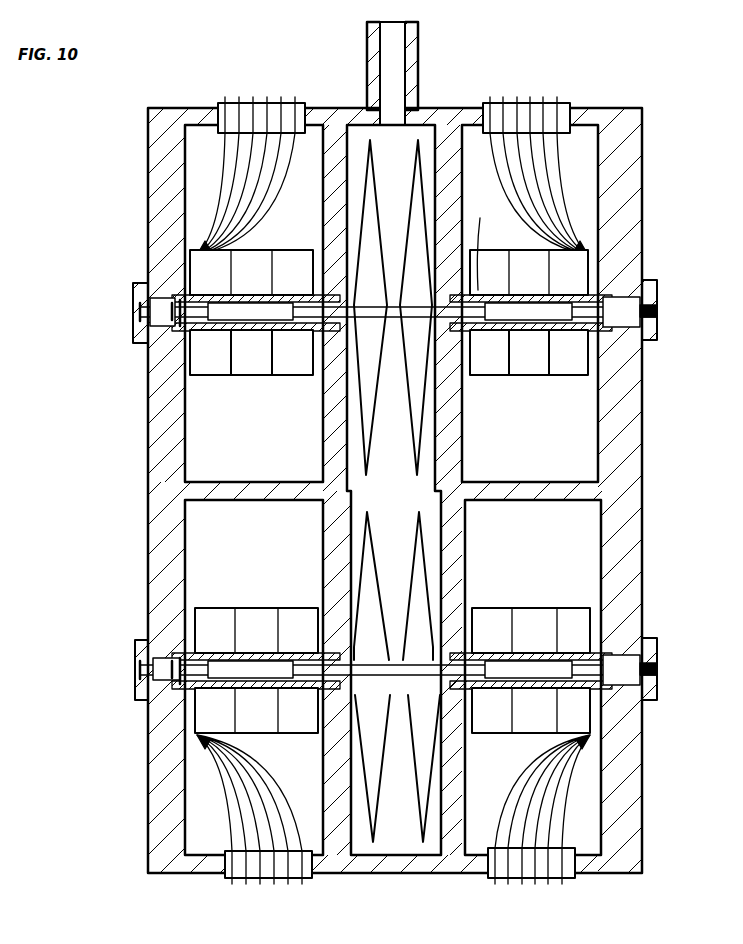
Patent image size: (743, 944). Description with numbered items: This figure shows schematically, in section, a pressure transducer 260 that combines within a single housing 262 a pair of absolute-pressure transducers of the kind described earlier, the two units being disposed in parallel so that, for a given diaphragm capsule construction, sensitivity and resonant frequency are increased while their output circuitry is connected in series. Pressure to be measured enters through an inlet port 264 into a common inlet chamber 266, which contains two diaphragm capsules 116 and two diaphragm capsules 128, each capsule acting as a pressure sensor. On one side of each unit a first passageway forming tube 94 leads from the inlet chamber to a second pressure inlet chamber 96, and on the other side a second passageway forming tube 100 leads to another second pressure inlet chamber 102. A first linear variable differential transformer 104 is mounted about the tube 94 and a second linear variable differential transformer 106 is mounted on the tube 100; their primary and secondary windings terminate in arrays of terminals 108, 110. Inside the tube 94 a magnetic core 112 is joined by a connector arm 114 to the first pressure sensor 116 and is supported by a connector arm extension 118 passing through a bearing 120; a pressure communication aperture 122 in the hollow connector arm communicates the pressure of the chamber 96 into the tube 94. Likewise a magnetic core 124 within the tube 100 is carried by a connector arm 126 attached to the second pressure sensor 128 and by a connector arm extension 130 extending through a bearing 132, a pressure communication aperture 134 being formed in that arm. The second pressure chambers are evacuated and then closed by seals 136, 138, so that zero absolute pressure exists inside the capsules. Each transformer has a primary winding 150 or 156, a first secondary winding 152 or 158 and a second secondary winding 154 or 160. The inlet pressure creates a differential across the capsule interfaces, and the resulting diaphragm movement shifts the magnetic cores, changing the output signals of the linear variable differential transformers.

The first passageway forming tube 94 is at (496, 280).
The second pressure inlet chamber 96 is at (648, 282).
The second passageway forming tube 100 is at (262, 275).
The second pressure inlet chamber 102 is at (150, 303).
The first linear variable differential transformer 104 is at (598, 255).
The second linear variable differential transformer 106 is at (183, 272).
The array of terminals 108 is at (522, 103).
The array of terminals 110 is at (292, 103).
The magnetic core 112 is at (598, 278).
The connector arm 114 is at (394, 490).
The first pressure sensor 116 is at (368, 140).
The connector arm extension 118 is at (650, 316).
The bearing 120 is at (650, 338).
The pressure communication aperture 122 is at (482, 244).
The magnetic core 124 is at (140, 340).
The connector arm 126 is at (372, 310).
The second pressure sensor 128 is at (438, 140).
The connector arm extension 130 is at (178, 330).
The bearing 132 is at (168, 326).
The pressure communication aperture 134 is at (284, 300).
The seal 136 is at (660, 310).
The seal 138 is at (150, 318).
The primary winding 150 is at (530, 373).
The first secondary winding 152 is at (568, 374).
The second secondary winding 154 is at (500, 372).
The primary winding 156 is at (258, 375).
The first secondary winding 158 is at (300, 374).
The second secondary winding 160 is at (222, 372).
The pressure transducer 260 is at (645, 140).
The housing 262 is at (605, 176).
The inlet port 264 is at (420, 30).
The inlet chamber 266 is at (402, 138).